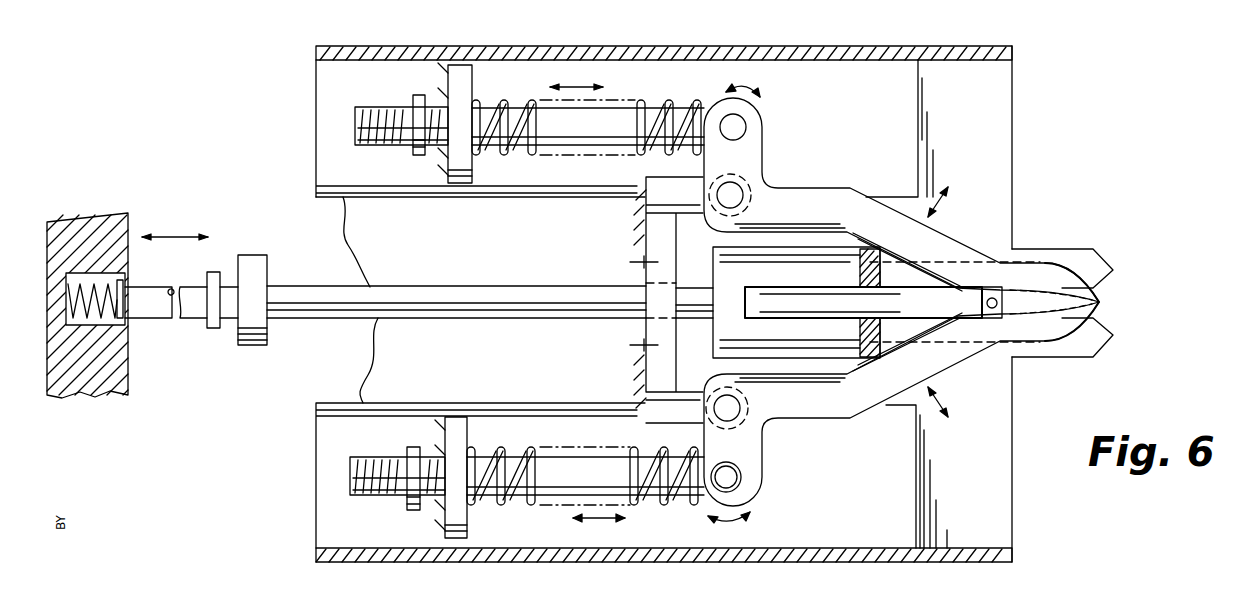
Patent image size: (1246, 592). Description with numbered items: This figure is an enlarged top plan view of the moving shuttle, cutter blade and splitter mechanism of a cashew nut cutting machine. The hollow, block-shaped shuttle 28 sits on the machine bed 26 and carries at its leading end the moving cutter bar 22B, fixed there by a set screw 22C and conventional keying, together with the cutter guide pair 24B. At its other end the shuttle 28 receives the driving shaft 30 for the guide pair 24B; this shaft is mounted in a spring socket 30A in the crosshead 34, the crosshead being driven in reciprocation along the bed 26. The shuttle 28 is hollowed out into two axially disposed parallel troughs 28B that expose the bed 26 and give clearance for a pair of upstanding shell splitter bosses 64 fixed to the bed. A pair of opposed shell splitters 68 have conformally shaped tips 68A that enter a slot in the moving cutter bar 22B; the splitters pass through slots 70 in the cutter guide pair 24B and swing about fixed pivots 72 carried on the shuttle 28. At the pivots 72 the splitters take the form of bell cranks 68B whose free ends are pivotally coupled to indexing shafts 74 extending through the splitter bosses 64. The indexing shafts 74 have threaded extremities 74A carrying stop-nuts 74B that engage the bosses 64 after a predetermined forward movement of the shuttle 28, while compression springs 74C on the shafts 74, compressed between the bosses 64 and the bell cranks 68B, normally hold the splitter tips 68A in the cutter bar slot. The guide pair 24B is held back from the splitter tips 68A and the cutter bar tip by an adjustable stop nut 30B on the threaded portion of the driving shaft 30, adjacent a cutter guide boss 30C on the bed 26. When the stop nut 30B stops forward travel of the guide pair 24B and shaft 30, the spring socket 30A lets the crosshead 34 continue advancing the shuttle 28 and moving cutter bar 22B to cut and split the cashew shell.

The moving cutter bar 22B is at (1042, 300).
The set screw 22C is at (982, 303).
The cutter guide pair 24B is at (820, 277).
The bed 26 is at (860, 176).
The shuttle 28 is at (975, 137).
The troughs 28B is at (340, 85).
The driving shaft 30 is at (313, 287).
The spring socket 30A is at (120, 267).
The adjustable stop nut 30B is at (213, 330).
The cutter guide boss 30C is at (253, 330).
The crosshead 34 is at (120, 380).
The shell splitter bosses 64 is at (472, 87).
The shell splitters 68 is at (835, 407).
The splitter tips 68A is at (1108, 289).
The bell cranks 68B is at (757, 143).
The slots 70 is at (898, 268).
The fixed pivots 72 is at (646, 266).
The indexing shafts 74 is at (585, 468).
The threaded extremities 74A is at (405, 146).
The stop-nuts 74B is at (416, 97).
The compression springs 74C is at (643, 105).